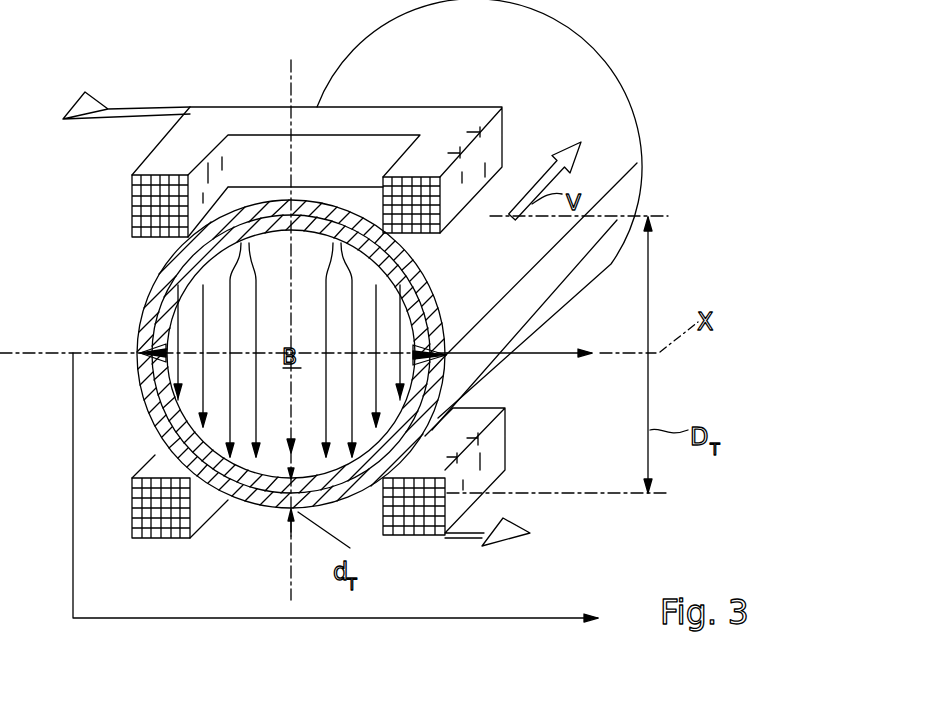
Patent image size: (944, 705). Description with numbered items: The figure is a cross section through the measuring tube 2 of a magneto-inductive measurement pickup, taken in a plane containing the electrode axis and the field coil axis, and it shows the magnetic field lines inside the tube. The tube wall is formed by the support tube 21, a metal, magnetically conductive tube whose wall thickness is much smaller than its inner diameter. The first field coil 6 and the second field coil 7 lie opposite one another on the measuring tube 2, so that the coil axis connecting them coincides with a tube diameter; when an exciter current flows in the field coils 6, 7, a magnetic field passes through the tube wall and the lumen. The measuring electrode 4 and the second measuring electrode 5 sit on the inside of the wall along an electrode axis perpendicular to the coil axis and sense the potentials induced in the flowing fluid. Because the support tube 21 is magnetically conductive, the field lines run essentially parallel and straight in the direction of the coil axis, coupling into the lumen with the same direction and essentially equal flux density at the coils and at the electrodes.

The measuring tube 2 is at (162, 252).
The support tube 21 is at (408, 280).
The measuring electrode 4 is at (150, 346).
The second measuring electrode 5 is at (430, 314).
The first field coil 6 is at (487, 453).
The second field coil 7 is at (147, 205).